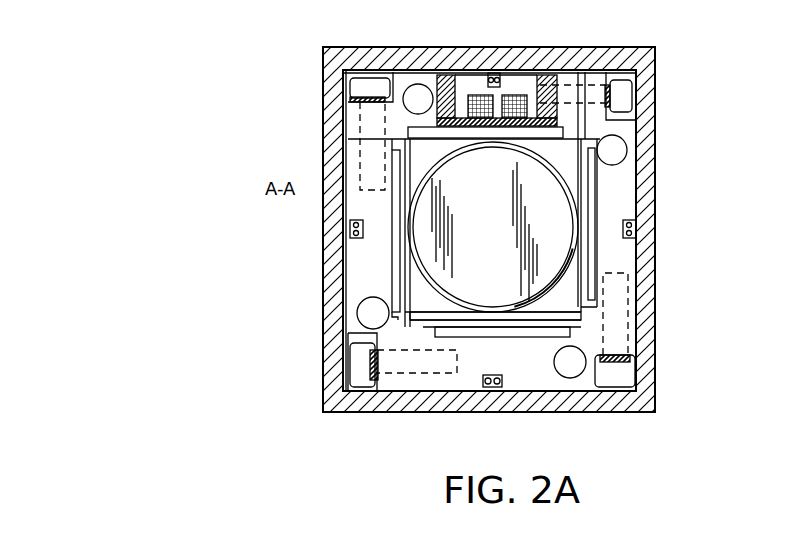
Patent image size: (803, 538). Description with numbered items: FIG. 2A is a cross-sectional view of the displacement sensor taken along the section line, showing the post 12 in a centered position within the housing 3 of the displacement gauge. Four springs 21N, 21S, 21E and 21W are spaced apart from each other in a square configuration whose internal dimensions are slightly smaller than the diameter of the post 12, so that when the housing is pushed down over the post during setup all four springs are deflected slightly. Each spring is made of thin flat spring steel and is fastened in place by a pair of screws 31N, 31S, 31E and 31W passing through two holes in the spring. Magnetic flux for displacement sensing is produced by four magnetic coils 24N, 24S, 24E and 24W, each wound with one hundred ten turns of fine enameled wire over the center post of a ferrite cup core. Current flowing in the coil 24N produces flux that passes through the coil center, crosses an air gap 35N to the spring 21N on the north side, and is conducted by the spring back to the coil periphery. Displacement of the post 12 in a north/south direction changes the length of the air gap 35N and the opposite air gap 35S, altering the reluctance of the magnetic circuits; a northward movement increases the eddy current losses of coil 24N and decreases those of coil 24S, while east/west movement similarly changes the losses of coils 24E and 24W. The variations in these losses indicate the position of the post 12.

The optical pickup housing 3 is at (676, 103).
The post 12 is at (452, 142).
The spring 21N is at (372, 128).
The spring 21E is at (585, 187).
The spring 21S is at (455, 312).
The spring 21W is at (410, 185).
The magnetic coil 24N is at (500, 105).
The magnetic coil 24E is at (598, 262).
The magnetic coil 24S is at (477, 337).
The magnetic coil 24W is at (395, 280).
The screws 31N is at (367, 78).
The screws 31E is at (620, 80).
The screws 31S is at (630, 372).
The screws 31W is at (360, 360).
The air gap 35N is at (482, 128).
The air gap 35S is at (547, 347).